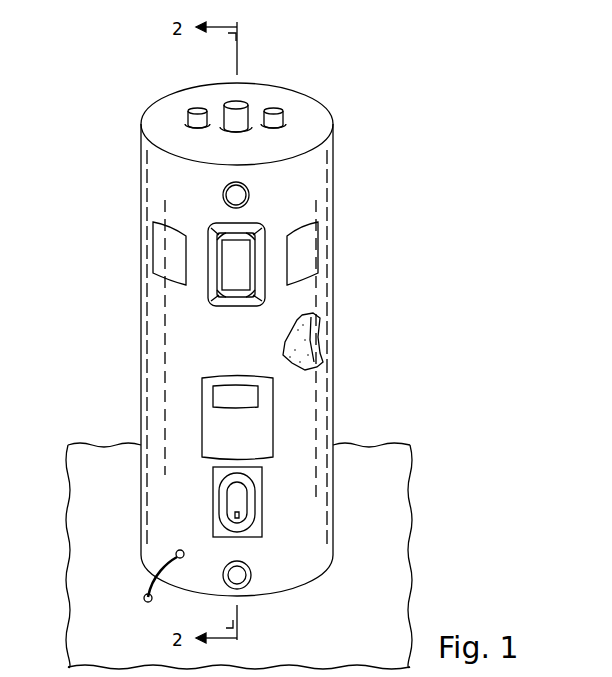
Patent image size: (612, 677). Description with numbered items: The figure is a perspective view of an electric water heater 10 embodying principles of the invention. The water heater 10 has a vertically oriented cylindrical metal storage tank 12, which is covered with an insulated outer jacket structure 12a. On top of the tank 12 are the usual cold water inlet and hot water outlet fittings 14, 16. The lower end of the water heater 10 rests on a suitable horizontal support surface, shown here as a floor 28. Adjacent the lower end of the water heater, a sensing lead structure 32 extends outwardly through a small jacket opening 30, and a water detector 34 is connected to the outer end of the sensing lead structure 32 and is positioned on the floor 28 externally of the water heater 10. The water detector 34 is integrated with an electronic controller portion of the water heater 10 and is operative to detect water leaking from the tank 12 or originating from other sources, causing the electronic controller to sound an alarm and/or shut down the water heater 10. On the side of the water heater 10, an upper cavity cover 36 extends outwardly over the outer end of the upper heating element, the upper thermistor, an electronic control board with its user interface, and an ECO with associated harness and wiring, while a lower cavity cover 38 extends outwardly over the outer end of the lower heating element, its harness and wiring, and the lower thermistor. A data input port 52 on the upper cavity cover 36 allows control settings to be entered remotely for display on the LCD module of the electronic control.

The water heater 10 is at (395, 115).
The storage tank 12 is at (333, 368).
The outer jacket structure 12a is at (333, 250).
The cold water inlet fitting 14 is at (277, 110).
The hot water outlet fitting 16 is at (196, 110).
The floor 28 is at (407, 473).
The jacket opening 30 is at (181, 550).
The sensing lead structure 32 is at (175, 553).
The water detector 34 is at (145, 601).
The upper cavity cover 36 is at (241, 288).
The lower cavity cover 38 is at (262, 500).
The data input port 52 is at (265, 240).